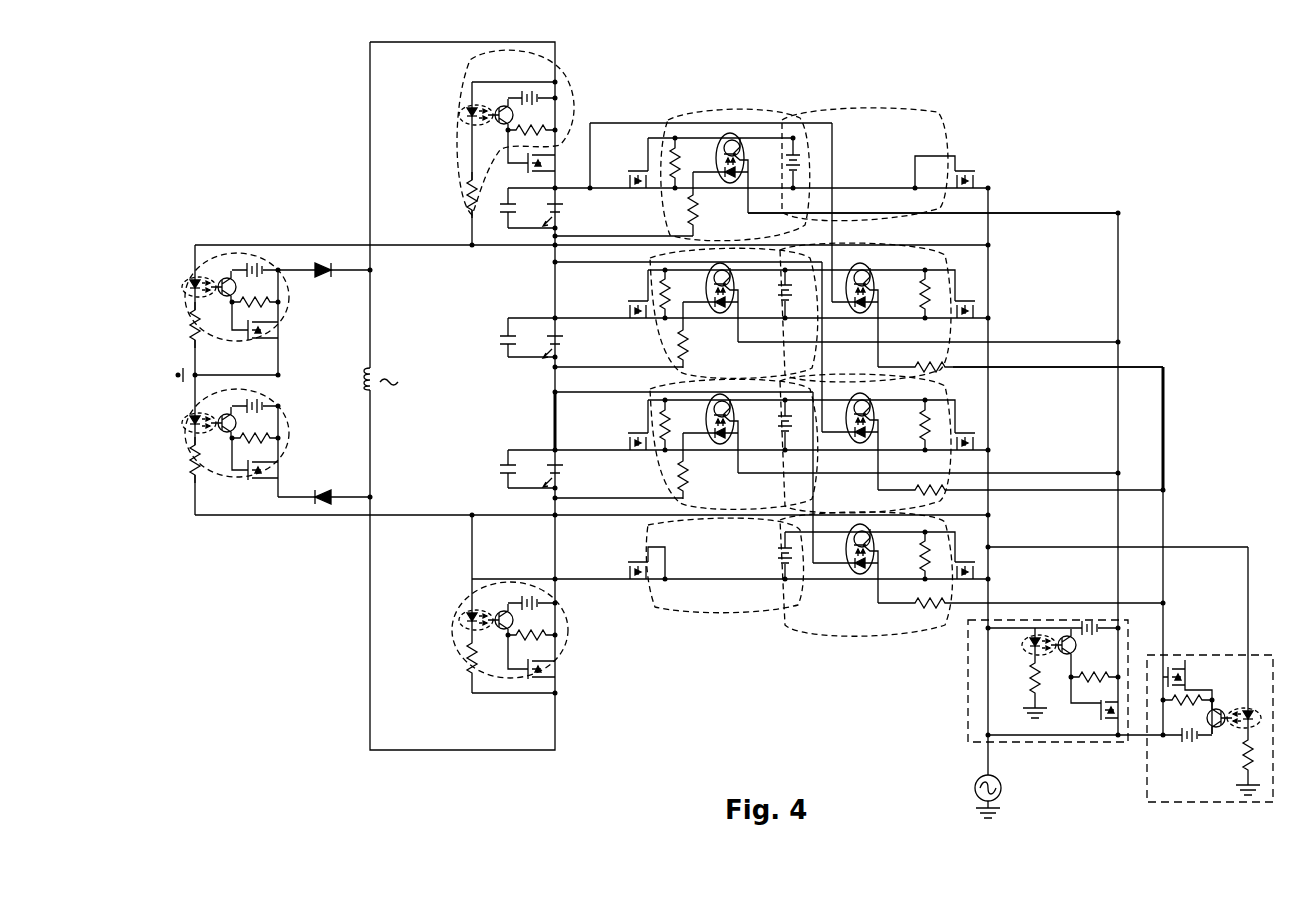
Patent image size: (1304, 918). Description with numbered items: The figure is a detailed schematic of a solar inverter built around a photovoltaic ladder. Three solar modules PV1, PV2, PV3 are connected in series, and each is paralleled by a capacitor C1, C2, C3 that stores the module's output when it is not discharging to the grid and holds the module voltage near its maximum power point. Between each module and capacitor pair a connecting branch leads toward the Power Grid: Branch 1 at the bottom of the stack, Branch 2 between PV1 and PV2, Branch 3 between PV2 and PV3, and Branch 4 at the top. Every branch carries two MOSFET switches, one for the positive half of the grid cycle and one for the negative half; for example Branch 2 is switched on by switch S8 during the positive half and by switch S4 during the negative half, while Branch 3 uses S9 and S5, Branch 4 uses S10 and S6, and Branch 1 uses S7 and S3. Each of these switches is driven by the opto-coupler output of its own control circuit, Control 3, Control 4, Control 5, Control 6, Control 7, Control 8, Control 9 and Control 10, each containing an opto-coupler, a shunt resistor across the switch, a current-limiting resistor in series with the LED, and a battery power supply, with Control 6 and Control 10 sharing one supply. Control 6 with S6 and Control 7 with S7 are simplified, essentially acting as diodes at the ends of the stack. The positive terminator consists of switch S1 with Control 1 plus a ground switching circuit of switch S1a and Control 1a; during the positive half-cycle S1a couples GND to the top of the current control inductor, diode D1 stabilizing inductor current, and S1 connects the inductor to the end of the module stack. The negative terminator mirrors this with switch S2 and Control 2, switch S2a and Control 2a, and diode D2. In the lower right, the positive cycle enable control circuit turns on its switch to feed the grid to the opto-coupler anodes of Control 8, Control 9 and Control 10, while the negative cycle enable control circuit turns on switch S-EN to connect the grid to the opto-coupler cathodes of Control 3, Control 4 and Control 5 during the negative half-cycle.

The control circuit 1a Control 1a is at (180, 283).
The switch S1a is at (255, 330).
The diode D1 is at (324, 280).
The ground GND is at (208, 375).
The control circuit 2a Control 2a is at (180, 470).
The switch S2a is at (251, 467).
The diode D2 is at (324, 486).
The control circuit 2 Control 2 is at (458, 130).
The switch S2 is at (543, 151).
The capacitor C3 is at (518, 208).
The solar module PV3 is at (570, 212).
The branch 4 Branch 4 is at (813, 212).
The switch S10 is at (630, 163).
The control circuit 10 Control 10 is at (700, 125).
The control circuit 6 Control 6 is at (920, 117).
The switch S6 is at (948, 168).
The branch 3 Branch 3 is at (812, 346).
The switch S9 is at (630, 294).
The control circuit 9 Control 9 is at (678, 373).
The control circuit 5 Control 5 is at (920, 256).
The switch S5 is at (969, 297).
The capacitor C2 is at (511, 337).
The solar module PV2 is at (571, 350).
The branch 2 Branch 2 is at (812, 477).
The switch S8 is at (630, 425).
The control circuit 8 Control 8 is at (678, 500).
The control circuit 4 Control 4 is at (905, 498).
The switch S4 is at (969, 428).
The capacitor C1 is at (511, 469).
The solar module PV1 is at (571, 480).
The branch 1 Branch 1 is at (860, 628).
The switch S7 is at (637, 559).
The control circuit 7 Control 7 is at (680, 606).
The control circuit 3 Control 3 is at (882, 628).
The switch S3 is at (969, 558).
The control circuit 1 Control 1 is at (458, 651).
The switch S1 is at (543, 657).
The switch S-EN is at (1196, 676).
The power grid Power Grid is at (972, 785).